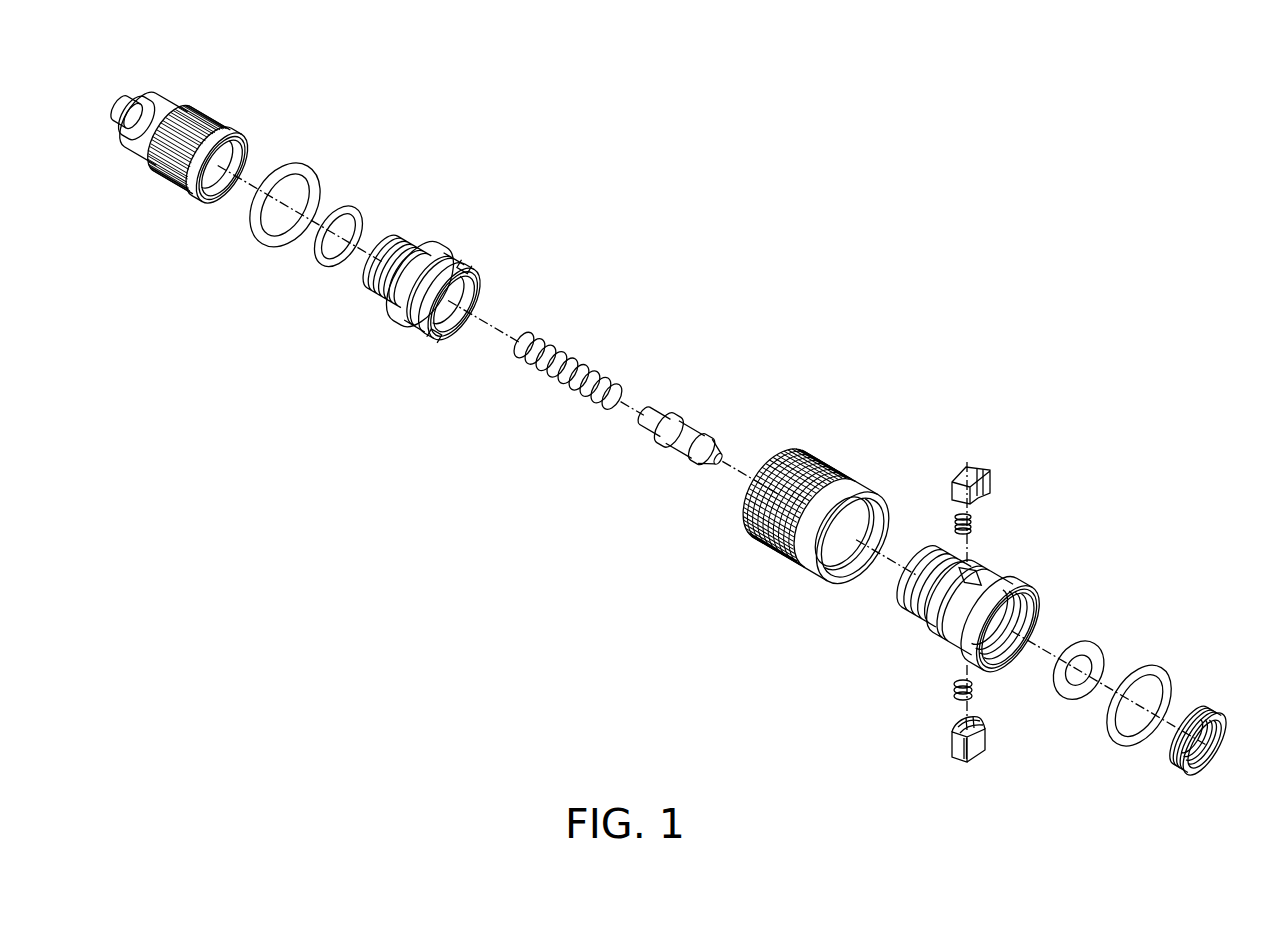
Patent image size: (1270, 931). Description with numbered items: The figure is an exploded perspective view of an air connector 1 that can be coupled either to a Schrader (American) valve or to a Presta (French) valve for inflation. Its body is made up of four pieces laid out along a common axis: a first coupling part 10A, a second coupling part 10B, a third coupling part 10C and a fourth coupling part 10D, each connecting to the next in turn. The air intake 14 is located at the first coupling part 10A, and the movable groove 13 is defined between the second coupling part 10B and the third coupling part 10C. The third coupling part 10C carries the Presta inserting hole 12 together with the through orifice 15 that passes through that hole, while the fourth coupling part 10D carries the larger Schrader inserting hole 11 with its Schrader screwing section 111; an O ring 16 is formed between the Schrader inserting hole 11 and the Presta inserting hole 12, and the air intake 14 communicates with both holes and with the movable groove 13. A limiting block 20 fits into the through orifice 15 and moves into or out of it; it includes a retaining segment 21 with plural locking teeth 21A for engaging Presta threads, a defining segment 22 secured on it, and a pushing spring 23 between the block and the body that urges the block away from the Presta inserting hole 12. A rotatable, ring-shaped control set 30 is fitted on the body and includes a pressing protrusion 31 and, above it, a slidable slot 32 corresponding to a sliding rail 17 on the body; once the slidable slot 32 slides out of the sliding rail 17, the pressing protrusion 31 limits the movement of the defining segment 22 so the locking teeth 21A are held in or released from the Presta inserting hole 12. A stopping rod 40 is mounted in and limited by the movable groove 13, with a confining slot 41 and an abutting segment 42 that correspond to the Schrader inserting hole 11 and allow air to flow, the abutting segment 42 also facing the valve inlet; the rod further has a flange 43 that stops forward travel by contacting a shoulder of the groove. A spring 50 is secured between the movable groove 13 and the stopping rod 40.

The air connector 1 is at (767, 340).
The first coupling part 10A is at (184, 187).
The second coupling part 10B is at (404, 322).
The third coupling part 10C is at (935, 632).
The fourth coupling part 10D is at (1172, 767).
The Schrader inserting hole 11 is at (1198, 742).
The Schrader screwing section 111 is at (1212, 730).
The Presta inserting hole 12 is at (1002, 660).
The movable groove 13 is at (230, 161).
The air intake 14 is at (126, 104).
The through orifice 15 is at (975, 572).
The O ring 16 is at (1090, 650).
The sliding rail 17 is at (459, 258).
The limiting block 20 is at (990, 478).
The retaining segment 21 is at (951, 731).
The locking teeth 21A is at (985, 738).
The defining segment 22 is at (978, 466).
The pushing spring 23 is at (955, 518).
The control set 30 is at (845, 476).
The pressing protrusion 31 is at (855, 538).
The slidable slot 32 is at (840, 580).
The stopping rod 40 is at (726, 463).
The confining slot 41 is at (696, 432).
The abutting segment 42 is at (720, 456).
The flange 43 is at (675, 420).
The spring 50 is at (568, 388).